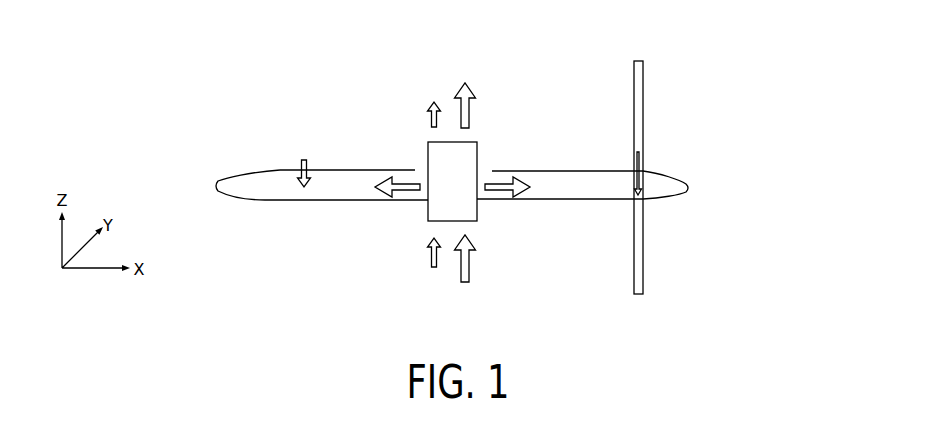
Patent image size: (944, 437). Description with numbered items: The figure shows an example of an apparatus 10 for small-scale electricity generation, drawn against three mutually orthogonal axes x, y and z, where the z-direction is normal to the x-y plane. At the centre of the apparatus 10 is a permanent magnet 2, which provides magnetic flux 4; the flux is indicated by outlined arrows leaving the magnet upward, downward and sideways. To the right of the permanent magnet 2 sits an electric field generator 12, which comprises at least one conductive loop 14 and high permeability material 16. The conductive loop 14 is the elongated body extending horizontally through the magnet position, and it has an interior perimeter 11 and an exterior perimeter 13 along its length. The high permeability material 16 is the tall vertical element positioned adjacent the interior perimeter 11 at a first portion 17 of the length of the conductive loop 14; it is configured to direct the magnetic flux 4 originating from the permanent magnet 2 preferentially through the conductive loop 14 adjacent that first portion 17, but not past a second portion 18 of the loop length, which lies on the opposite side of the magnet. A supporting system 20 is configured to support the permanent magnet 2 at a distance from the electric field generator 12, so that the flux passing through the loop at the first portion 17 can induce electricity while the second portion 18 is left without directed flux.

The apparatus 10 is at (760, 88).
The permanent magnet 2 is at (428, 152).
The magnetic flux 4 is at (304, 159).
The interior perimeter 11 is at (578, 171).
The electric field generator 12 is at (681, 155).
The exterior perimeter 13 is at (563, 170).
The conductive loop 14 is at (237, 200).
The high permeability material 16 is at (641, 60).
The first portion 17 is at (680, 196).
The second portion 18 is at (324, 200).
The supporting system 20 is at (492, 170).